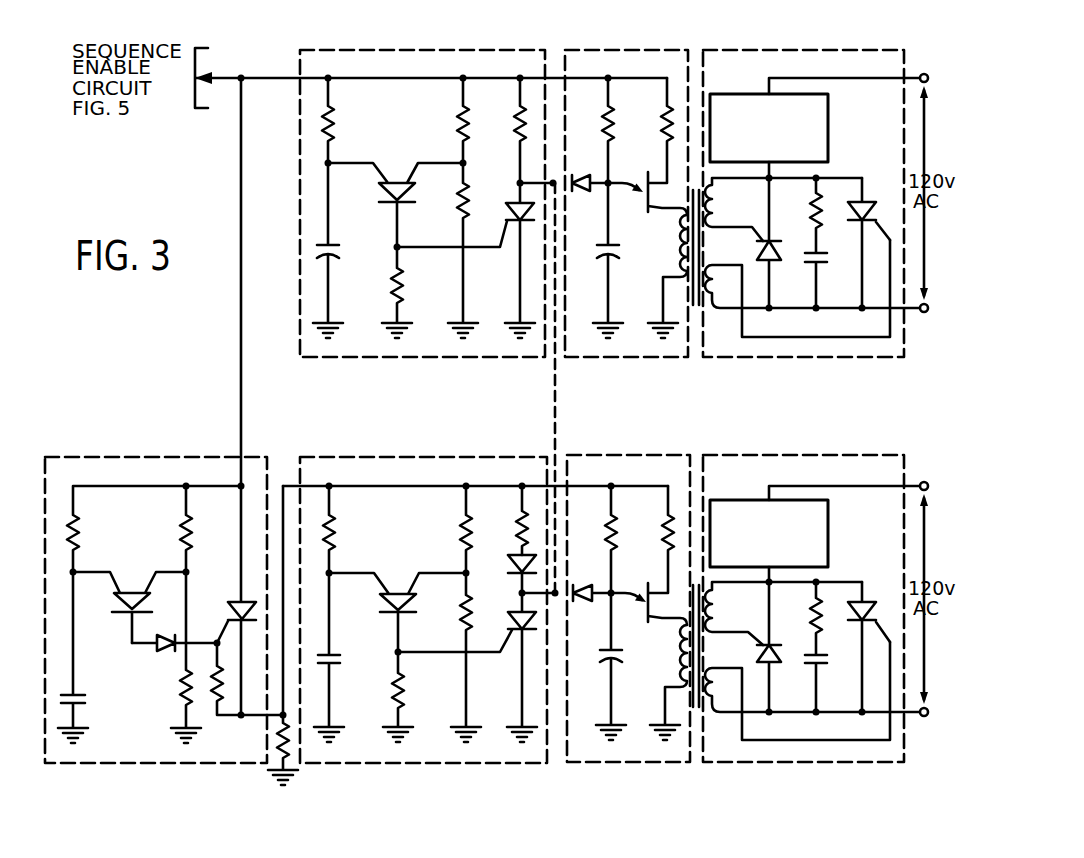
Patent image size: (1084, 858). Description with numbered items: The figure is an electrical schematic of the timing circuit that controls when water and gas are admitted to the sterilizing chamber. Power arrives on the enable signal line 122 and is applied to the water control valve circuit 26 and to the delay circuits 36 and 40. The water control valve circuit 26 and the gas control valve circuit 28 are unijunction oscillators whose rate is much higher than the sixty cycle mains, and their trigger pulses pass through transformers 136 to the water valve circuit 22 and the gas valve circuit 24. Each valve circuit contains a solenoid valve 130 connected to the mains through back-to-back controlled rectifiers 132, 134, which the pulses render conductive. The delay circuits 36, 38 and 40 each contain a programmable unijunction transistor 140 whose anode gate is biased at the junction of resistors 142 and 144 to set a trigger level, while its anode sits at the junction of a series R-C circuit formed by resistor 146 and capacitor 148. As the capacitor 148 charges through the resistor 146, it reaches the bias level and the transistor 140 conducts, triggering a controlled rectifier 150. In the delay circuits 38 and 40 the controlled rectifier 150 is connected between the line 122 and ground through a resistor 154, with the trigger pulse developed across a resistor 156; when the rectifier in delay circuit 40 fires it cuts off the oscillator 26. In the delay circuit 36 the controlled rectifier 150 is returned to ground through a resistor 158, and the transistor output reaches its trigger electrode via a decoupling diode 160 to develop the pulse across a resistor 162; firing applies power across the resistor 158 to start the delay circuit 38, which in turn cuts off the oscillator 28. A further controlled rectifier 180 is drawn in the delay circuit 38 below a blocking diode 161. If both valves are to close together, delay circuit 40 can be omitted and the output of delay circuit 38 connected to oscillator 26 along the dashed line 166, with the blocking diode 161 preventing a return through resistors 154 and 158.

The enable signal line 122 is at (227, 74).
The delay circuit 40 is at (430, 50).
The water control valve circuit 26 is at (638, 50).
The water valve circuit 22 is at (819, 50).
The delay circuit 36 is at (170, 457).
The delay circuit 38 is at (436, 457).
The gas control valve circuit 28 is at (637, 455).
The gas valve circuit 24 is at (830, 455).
The resistor 146 is at (335, 121).
The resistor 142 is at (462, 114).
The resistor 154 is at (518, 115).
The programmable unijunction transistor 140 is at (398, 183).
The controlled rectifier 150 is at (511, 205).
The resistor 144 is at (462, 213).
The capacitor 148 is at (336, 253).
The resistor 156 is at (401, 284).
The solenoid valve 130 is at (828, 127).
The controlled rectifier 132 is at (774, 241).
The controlled rectifier 134 is at (867, 200).
The transformer 136 is at (696, 308).
The dashed line 166 is at (555, 392).
The decoupling diode 160 is at (157, 651).
The resistor 162 is at (216, 704).
The resistor 158 is at (290, 764).
The blocking diode 161 is at (518, 566).
The silicon controlled rectifier 180 is at (517, 618).